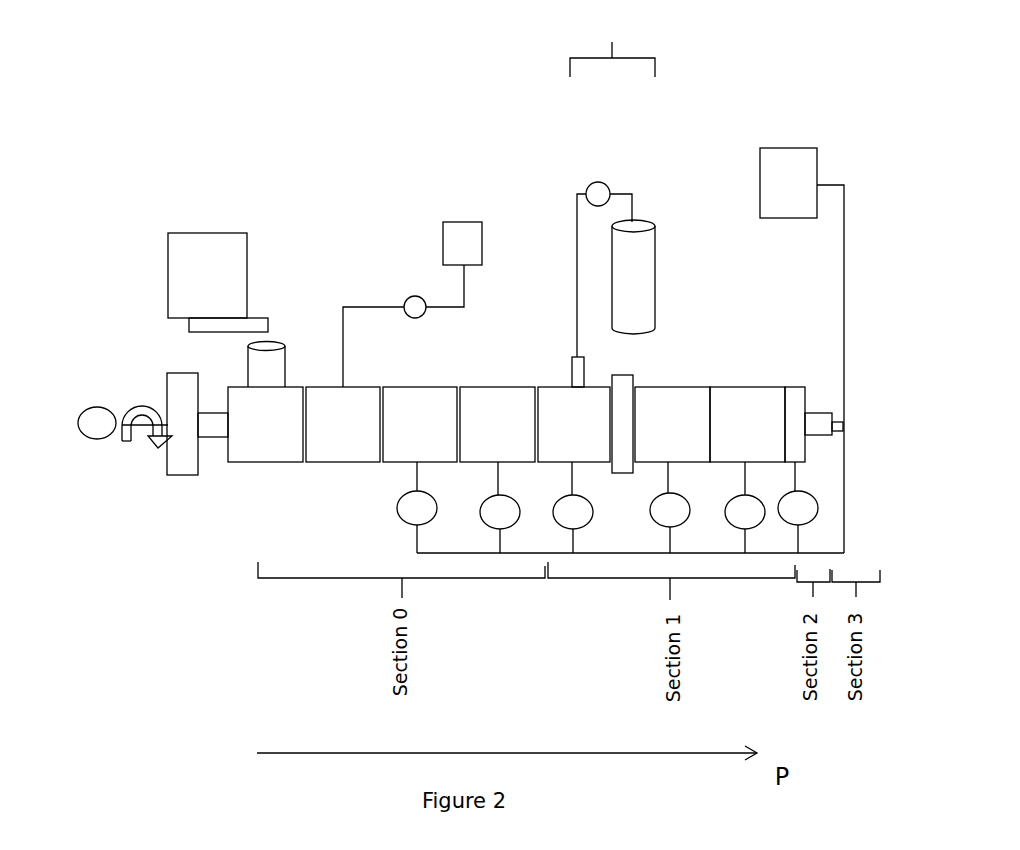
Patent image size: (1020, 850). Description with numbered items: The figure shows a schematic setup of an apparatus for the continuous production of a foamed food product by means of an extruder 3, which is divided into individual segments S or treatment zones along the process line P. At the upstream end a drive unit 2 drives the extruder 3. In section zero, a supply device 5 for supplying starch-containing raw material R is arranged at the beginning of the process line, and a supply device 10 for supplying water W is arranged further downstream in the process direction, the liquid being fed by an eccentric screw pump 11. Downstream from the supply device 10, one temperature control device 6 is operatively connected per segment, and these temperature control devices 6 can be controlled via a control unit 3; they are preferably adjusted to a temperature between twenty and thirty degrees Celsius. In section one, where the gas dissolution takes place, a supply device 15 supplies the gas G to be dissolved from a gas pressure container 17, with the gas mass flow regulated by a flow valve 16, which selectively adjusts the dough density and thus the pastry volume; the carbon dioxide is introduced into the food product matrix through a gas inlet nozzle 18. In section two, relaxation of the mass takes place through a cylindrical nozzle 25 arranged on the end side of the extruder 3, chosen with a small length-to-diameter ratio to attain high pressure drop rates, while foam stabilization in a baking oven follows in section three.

The drive unit 2 is at (95, 404).
The extruder 3 is at (788, 148).
The supply device for supplying a starch-containing raw material 5 is at (168, 294).
The temperature control device 6 is at (480, 518).
The supply device for supplying liquid (water) 10 is at (482, 230).
The eccentric screw pump 11 is at (420, 317).
The supply device (gas) 15 is at (638, 183).
The flow valve 16 is at (595, 183).
The gas pressure container 17 is at (643, 230).
The gas inlet nozzle 18 is at (573, 357).
The nozzle 25 is at (843, 430).